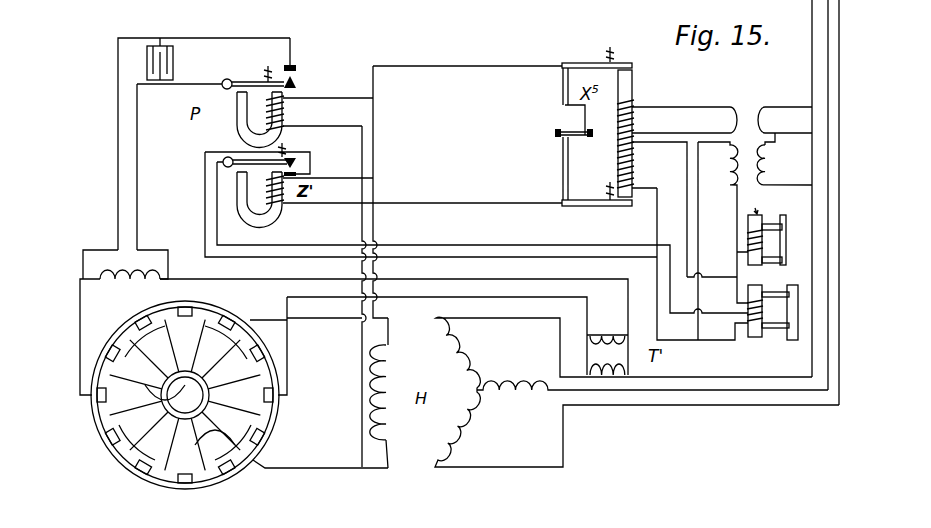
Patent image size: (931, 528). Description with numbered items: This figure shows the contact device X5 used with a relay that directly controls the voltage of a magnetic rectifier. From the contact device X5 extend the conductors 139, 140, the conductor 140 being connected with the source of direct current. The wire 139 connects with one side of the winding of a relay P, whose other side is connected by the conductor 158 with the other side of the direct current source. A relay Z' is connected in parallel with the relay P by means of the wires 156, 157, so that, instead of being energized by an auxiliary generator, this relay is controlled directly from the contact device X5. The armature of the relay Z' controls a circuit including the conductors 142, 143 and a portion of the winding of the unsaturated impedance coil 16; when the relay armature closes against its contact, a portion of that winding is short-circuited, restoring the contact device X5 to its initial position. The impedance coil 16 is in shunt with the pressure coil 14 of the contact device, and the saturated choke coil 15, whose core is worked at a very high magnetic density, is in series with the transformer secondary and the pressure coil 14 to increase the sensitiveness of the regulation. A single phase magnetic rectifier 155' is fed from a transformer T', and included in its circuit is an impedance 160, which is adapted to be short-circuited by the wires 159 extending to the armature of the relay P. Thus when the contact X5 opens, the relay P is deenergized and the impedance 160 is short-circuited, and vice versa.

The pressure coil 14 is at (633, 163).
The saturated choke coil 15 is at (747, 237).
The unsaturated impedance coil 16 is at (757, 341).
The conductor 139 is at (477, 64).
The conductor 140 is at (470, 194).
The conductor 142 is at (472, 238).
The conductor 143 is at (524, 243).
The single phase magnetic rectifier 155' is at (203, 395).
The wire 156 is at (328, 178).
The wire 157 is at (317, 210).
The conductor 158 is at (316, 130).
The wires 159 is at (137, 170).
The impedance 160 is at (118, 290).